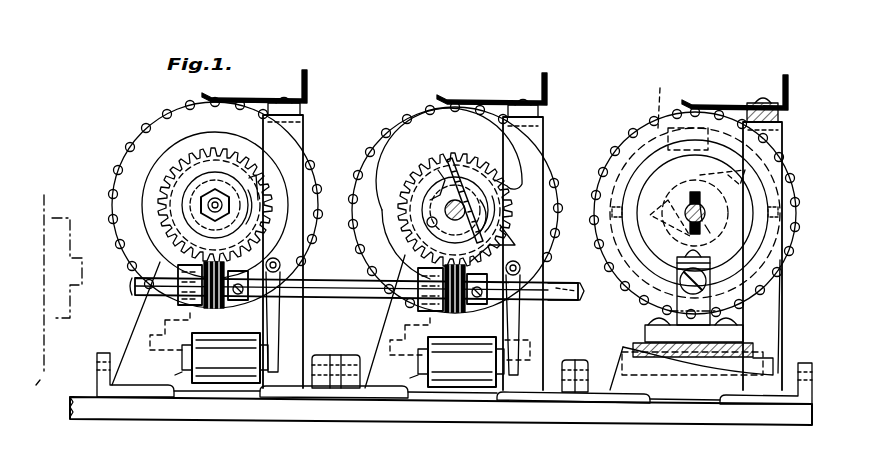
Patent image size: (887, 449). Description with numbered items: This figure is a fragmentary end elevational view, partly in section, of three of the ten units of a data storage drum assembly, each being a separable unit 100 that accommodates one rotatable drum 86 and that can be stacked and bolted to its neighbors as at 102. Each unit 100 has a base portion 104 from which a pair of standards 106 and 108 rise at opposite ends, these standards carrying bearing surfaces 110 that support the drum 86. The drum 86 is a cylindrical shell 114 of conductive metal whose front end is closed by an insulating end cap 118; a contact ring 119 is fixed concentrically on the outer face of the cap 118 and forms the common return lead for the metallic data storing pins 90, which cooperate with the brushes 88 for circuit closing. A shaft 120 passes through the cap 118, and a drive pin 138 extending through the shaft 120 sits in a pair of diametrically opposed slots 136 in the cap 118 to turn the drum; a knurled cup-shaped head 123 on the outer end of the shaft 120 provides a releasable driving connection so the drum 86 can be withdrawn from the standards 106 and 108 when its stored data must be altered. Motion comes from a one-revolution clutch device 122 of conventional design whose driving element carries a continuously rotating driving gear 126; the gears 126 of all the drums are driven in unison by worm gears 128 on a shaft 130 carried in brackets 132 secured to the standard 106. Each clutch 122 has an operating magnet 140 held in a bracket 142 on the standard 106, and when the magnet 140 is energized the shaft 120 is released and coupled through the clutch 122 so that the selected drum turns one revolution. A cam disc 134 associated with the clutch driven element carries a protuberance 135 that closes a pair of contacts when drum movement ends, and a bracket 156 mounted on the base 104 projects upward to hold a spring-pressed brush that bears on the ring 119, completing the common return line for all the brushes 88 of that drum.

The drum 86 is at (356, 165).
The brushes 88 is at (232, 97).
The metallic data storing pins 90 is at (125, 165).
The separable unit 100 is at (290, 398).
The bolt 102 is at (357, 355).
The base portion 104 is at (150, 397).
The standard 106 is at (298, 328).
The standard 108 is at (778, 298).
The bearing surfaces 110 is at (215, 225).
The cylindrical shell 114 is at (677, 108).
The end cap 118 is at (160, 128).
The contact ring 119 is at (232, 135).
The shaft 120 is at (712, 210).
The one-revolution clutch device 122 is at (487, 176).
The knurled cup-shaped head 123 is at (680, 178).
The driving gear 126 is at (195, 168).
The worm gears 128 is at (220, 308).
The shaft 130 is at (345, 277).
The brackets 132 is at (172, 306).
The cam disc 134 is at (192, 185).
The protuberance 135 is at (182, 170).
The slots 136 is at (692, 190).
The drive pin 138 is at (712, 230).
The operating magnet 140 is at (343, 360).
The bracket 142 is at (281, 376).
The bracket 156 is at (150, 331).